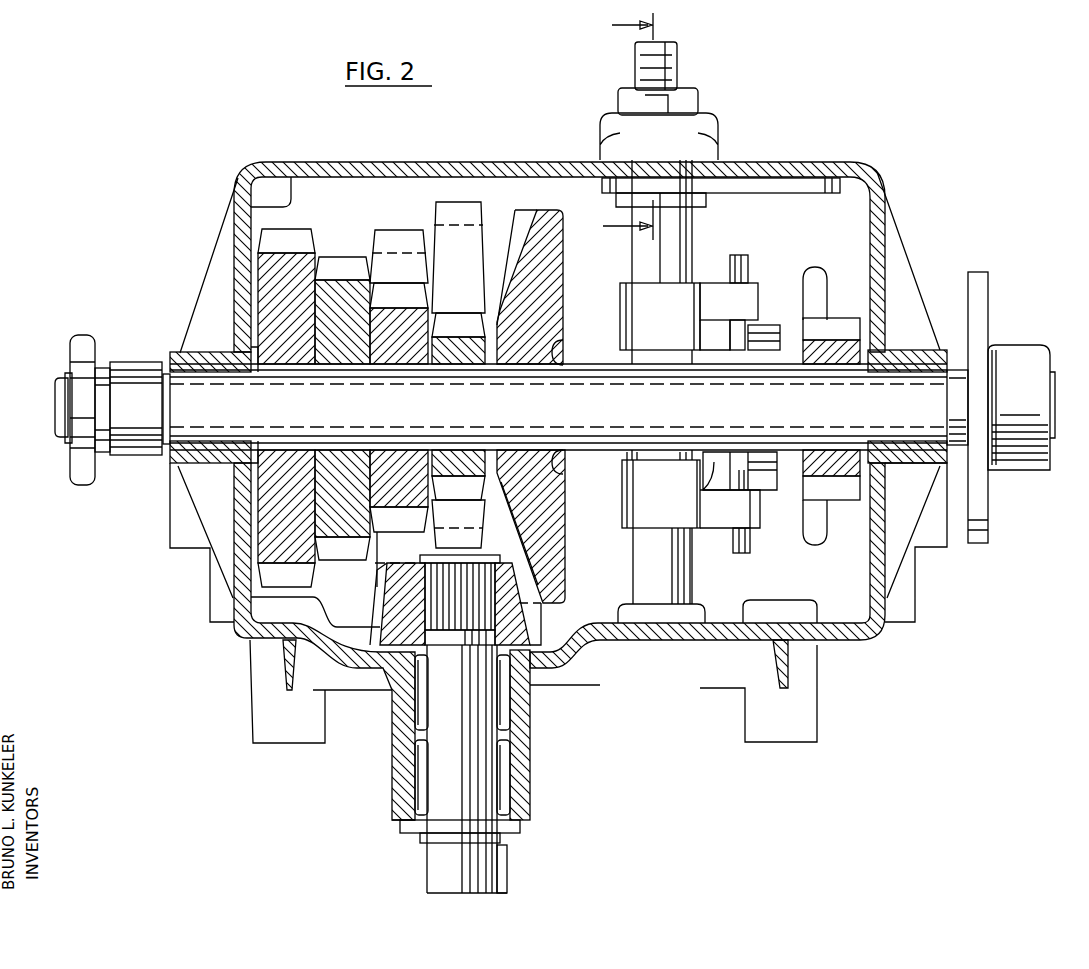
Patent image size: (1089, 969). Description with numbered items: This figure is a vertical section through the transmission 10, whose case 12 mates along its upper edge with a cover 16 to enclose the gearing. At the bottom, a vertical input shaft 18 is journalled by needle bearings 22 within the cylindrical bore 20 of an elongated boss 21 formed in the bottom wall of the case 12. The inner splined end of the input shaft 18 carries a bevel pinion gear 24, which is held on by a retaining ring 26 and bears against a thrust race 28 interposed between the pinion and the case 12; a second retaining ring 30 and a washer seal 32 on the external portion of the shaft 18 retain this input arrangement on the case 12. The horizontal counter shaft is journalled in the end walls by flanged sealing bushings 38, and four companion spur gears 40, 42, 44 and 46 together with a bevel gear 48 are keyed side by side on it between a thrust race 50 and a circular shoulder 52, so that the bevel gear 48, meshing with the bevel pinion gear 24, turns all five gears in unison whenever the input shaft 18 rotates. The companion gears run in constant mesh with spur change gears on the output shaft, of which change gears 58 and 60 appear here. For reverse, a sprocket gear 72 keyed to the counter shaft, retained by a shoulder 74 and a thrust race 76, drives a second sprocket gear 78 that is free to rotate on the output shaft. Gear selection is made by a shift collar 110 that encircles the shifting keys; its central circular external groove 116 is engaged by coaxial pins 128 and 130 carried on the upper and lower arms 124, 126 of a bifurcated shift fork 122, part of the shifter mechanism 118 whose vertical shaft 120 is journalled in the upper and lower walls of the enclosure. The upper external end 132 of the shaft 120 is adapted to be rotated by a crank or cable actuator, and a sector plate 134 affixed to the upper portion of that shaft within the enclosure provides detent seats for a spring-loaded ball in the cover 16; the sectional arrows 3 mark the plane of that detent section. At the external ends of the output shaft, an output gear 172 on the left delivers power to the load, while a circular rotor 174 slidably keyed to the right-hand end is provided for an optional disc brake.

The section line 3- 3 is at (618, 126).
The transmission 10 is at (838, 136).
The case 12 is at (882, 642).
The cover 16 is at (884, 168).
The vertical input shaft 18 is at (505, 846).
The cylindrical bore 20 is at (500, 698).
The elongated boss 21 is at (530, 770).
The needle bearings 22 is at (415, 718).
The bevel pinion gear 24 is at (548, 612).
The retaining ring 26 is at (424, 562).
The thrust race 28 is at (570, 650).
The second retaining ring 30 is at (418, 835).
The washer seal 32 is at (402, 824).
The flanged sealing bushings 38 is at (178, 360).
The companion spur gear 40 is at (300, 236).
The companion spur gear 42 is at (338, 262).
The companion spur gear 44 is at (396, 300).
The companion spur gear 46 is at (457, 322).
The bevel gear 48 is at (565, 540).
The thrust race 50 is at (258, 470).
The circular shoulder 52 is at (555, 350).
The spur change gear 58 is at (396, 236).
The spur change gear 60 is at (476, 210).
The sprocket gear 72 is at (812, 320).
The shoulder 74 is at (797, 408).
The thrust race 76 is at (880, 480).
The sprocket gear 78 is at (815, 283).
The shift collar 110 is at (779, 495).
The central circular external groove 116 is at (756, 347).
The shifter mechanism 118 is at (718, 258).
The vertical shaft 120 is at (690, 240).
The bifurcated shift fork 122 is at (619, 283).
The upper arm 124 is at (755, 290).
The lower arm 126 is at (760, 528).
The pin 128 is at (740, 320).
The pin 130 is at (740, 490).
The upper external end 132 is at (690, 108).
The sector plate 134 is at (768, 205).
The output gear 172 is at (72, 472).
The circular rotor 174 is at (982, 322).